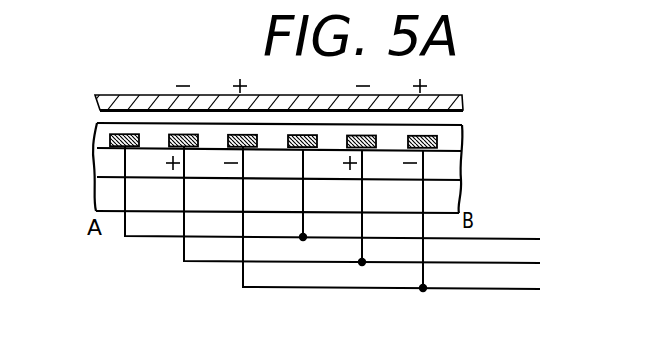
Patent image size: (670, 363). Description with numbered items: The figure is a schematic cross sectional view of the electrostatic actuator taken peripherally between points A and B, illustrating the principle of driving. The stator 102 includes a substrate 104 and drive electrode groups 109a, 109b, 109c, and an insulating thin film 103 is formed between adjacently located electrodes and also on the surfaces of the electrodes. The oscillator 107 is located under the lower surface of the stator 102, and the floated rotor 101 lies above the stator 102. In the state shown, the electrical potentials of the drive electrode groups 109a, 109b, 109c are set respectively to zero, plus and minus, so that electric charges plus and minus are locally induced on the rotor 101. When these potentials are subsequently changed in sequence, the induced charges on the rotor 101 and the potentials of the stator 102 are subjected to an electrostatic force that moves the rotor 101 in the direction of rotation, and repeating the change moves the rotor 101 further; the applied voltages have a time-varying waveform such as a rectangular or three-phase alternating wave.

The rotor 101 is at (96, 97).
The stator 102 is at (68, 116).
The insulating thin film 103 is at (450, 140).
The substrate 104 is at (450, 167).
The oscillator 107 is at (100, 198).
The drive electrode group 109a is at (528, 238).
The drive electrode group 109b is at (528, 264).
The drive electrode group 109c is at (522, 291).